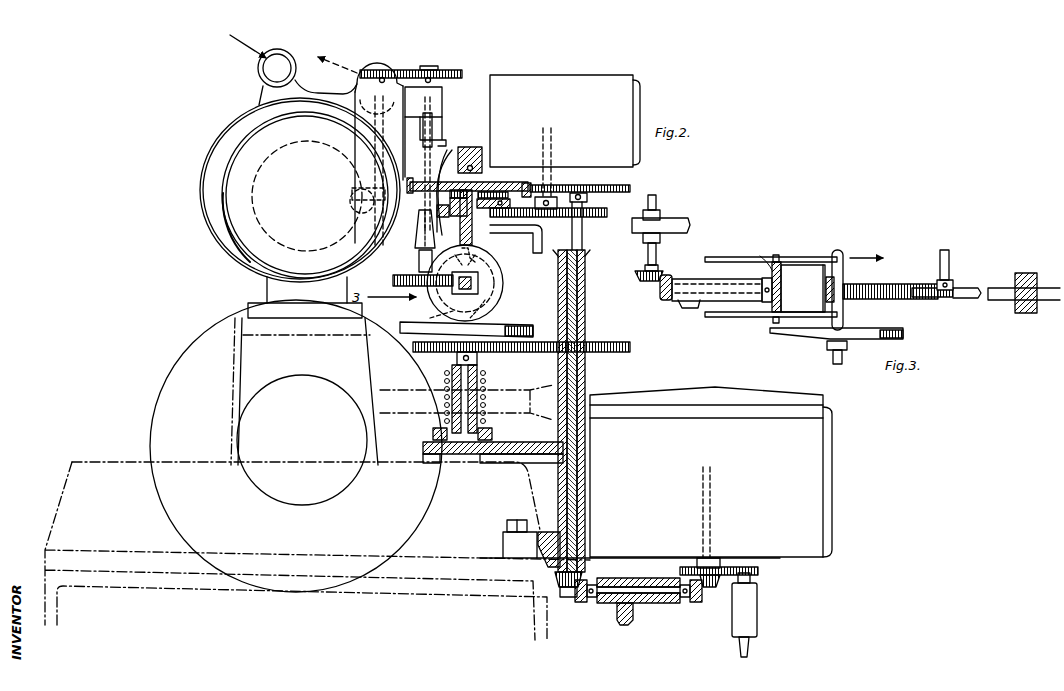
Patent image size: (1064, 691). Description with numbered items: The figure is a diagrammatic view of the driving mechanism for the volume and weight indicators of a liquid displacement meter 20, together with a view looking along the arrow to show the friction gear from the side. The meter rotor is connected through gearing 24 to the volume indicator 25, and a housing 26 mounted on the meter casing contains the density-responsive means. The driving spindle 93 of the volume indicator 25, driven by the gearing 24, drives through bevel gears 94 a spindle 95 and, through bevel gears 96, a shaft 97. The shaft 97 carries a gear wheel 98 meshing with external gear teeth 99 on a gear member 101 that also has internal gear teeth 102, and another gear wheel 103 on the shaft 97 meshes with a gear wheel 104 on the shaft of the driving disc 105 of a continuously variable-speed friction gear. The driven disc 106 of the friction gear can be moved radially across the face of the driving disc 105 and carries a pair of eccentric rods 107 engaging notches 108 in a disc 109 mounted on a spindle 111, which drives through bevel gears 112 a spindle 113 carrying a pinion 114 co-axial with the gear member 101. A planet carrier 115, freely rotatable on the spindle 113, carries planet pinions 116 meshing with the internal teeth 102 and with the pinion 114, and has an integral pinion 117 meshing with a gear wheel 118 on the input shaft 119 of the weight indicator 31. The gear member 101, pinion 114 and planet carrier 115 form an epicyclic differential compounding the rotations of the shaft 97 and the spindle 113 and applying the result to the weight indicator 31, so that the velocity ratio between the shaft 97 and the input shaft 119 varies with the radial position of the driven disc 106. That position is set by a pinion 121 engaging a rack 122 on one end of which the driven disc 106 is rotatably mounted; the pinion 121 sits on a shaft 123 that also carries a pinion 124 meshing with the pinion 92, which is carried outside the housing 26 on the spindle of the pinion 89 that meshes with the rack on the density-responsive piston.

In FIG. 2, the displacement meter 20 is at (507, 612).
In FIG. 2, the gearing 24 is at (757, 608).
In FIG. 2, the volume indicator 25 is at (818, 483).
In FIG. 2, the housing 26 is at (247, 275).
In FIG. 2, the weight indicator 31 is at (613, 83).
In FIG. 2, the pinion 89 is at (358, 206).
In FIG. 2, the pinion 92 is at (392, 80).
In FIG. 2, the driving spindle 93 is at (719, 564).
In FIG. 2, the bevel gears 94 is at (702, 590).
In FIG. 2, the spindle 95 is at (672, 592).
In FIG. 2, the bevel gears 96 is at (572, 592).
In FIG. 2, the shaft 97 is at (586, 385).
In FIG. 2, the gear wheel 98 is at (629, 188).
In FIG. 2, the external gear teeth 99 is at (529, 183).
In FIG. 2, the gear member 101 is at (488, 181).
In FIG. 2, the internal gear teeth 102 is at (437, 192).
In FIG. 2, the gear wheel 103 is at (630, 345).
In FIG. 2, the gear wheel 104 is at (478, 352).
In FIG. 2, the driving disc 105 is at (528, 325).
In FIG. 2, the driven disc 106 is at (503, 288).
In FIG. 3, the driven disc 106 is at (840, 253).
In FIG. 3, the eccentric rods 107 is at (810, 312).
In FIG. 3, the notches 108 is at (780, 262).
In FIG. 2, the disc 109 is at (505, 299).
In FIG. 3, the disc 109 is at (774, 266).
In FIG. 3, the spindle 111 is at (767, 304).
In FIG. 2, the bevel gears 112 is at (499, 276).
In FIG. 3, the bevel gears 112 is at (656, 285).
In FIG. 2, the spindle 113 is at (470, 250).
In FIG. 2, the pinion 114 is at (455, 222).
In FIG. 2, the planet carrier 115 is at (450, 170).
In FIG. 2, the planet pinions 116 is at (516, 181).
In FIG. 2, the pinion 117 is at (420, 240).
In FIG. 2, the gear wheel 118 is at (588, 213).
In FIG. 2, the input shaft 119 is at (552, 184).
In FIG. 2, the pinion 121 is at (403, 290).
In FIG. 3, the pinion 121 is at (968, 298).
In FIG. 2, the rack 122 is at (430, 319).
In FIG. 3, the rack 122 is at (903, 284).
In FIG. 2, the shaft 123 is at (433, 128).
In FIG. 2, the pinion 124 is at (455, 72).